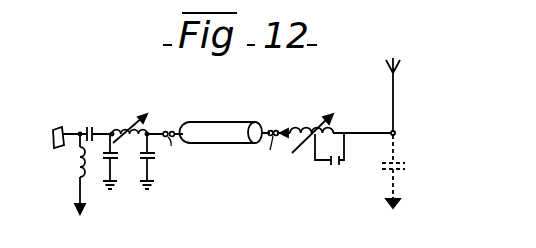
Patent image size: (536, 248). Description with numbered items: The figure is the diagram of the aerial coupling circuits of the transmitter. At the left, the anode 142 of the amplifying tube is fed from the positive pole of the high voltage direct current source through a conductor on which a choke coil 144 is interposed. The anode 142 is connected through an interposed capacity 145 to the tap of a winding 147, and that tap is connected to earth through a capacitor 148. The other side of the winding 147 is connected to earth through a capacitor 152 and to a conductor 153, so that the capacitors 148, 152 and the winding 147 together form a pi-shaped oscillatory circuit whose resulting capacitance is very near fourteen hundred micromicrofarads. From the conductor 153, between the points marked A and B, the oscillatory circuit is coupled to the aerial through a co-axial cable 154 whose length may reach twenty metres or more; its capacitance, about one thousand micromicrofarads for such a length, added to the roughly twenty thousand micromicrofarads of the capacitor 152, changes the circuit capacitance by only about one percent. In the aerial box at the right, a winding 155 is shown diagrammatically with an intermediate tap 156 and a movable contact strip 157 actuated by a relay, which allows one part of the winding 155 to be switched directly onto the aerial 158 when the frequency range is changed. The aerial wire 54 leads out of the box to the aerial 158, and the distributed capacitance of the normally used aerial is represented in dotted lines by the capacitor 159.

The anode 142 is at (57, 126).
The choke coil 144 is at (74, 164).
The capacity 145 is at (94, 126).
The winding 147 is at (125, 128).
The capacitor 148 is at (106, 159).
The capacitor 152 is at (150, 156).
The conductor 153 is at (157, 131).
The co-axial cable 154 is at (215, 127).
The winding 155 is at (304, 118).
The intermediate tap 156 is at (313, 161).
The movable contact strip 157 is at (340, 165).
The aerial wire 54 is at (365, 131).
The aerial 158 is at (398, 101).
The capacitor 159 is at (399, 163).
The point A is at (168, 148).
The point B is at (270, 148).